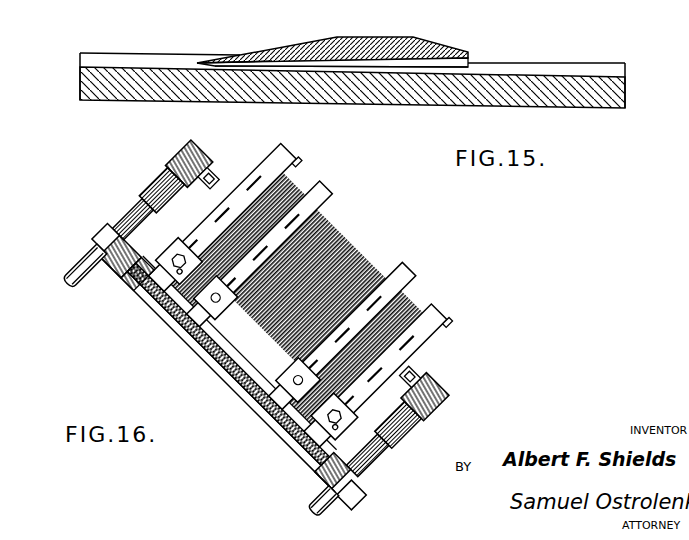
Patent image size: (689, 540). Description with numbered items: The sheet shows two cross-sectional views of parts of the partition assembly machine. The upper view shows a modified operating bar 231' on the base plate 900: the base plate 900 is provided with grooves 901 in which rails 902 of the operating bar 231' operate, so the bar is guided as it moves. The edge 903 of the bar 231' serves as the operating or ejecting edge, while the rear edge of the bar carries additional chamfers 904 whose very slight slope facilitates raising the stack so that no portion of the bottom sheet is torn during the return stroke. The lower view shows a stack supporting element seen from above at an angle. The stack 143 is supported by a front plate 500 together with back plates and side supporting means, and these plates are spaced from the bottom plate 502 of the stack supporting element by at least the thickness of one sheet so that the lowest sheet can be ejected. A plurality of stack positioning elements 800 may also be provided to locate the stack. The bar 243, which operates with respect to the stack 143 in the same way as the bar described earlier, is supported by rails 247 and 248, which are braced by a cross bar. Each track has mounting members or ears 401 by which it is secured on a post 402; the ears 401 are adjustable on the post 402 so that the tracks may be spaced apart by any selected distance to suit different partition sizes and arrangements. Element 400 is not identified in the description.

In FIG. 15, the base plate 900 is at (622, 90).
In FIG. 15, the groove 901 is at (521, 69).
In FIG. 15, the rail 902 is at (470, 66).
In FIG. 15, the edge 903 is at (470, 55).
In FIG. 15, the chamfer 904 is at (257, 58).
In FIG. 15, the operating bar 231' is at (332, 39).
In FIG. 16, the stack 143 is at (339, 253).
In FIG. 16, the bar 243 is at (162, 313).
In FIG. 16, the bottom plate 502 is at (205, 348).
In FIG. 16, the front plate 500 is at (292, 151).
In FIG. 16, the stack positioning element 800 is at (327, 186).
In FIG. 16, the rail 248 is at (120, 277).
In FIG. 16, the rail 247 is at (318, 479).
In FIG. 16, the post 402 is at (130, 226).
In FIG. 16, the mounting member 401 is at (93, 246).
In FIG. 16, the rod 400 is at (101, 259).